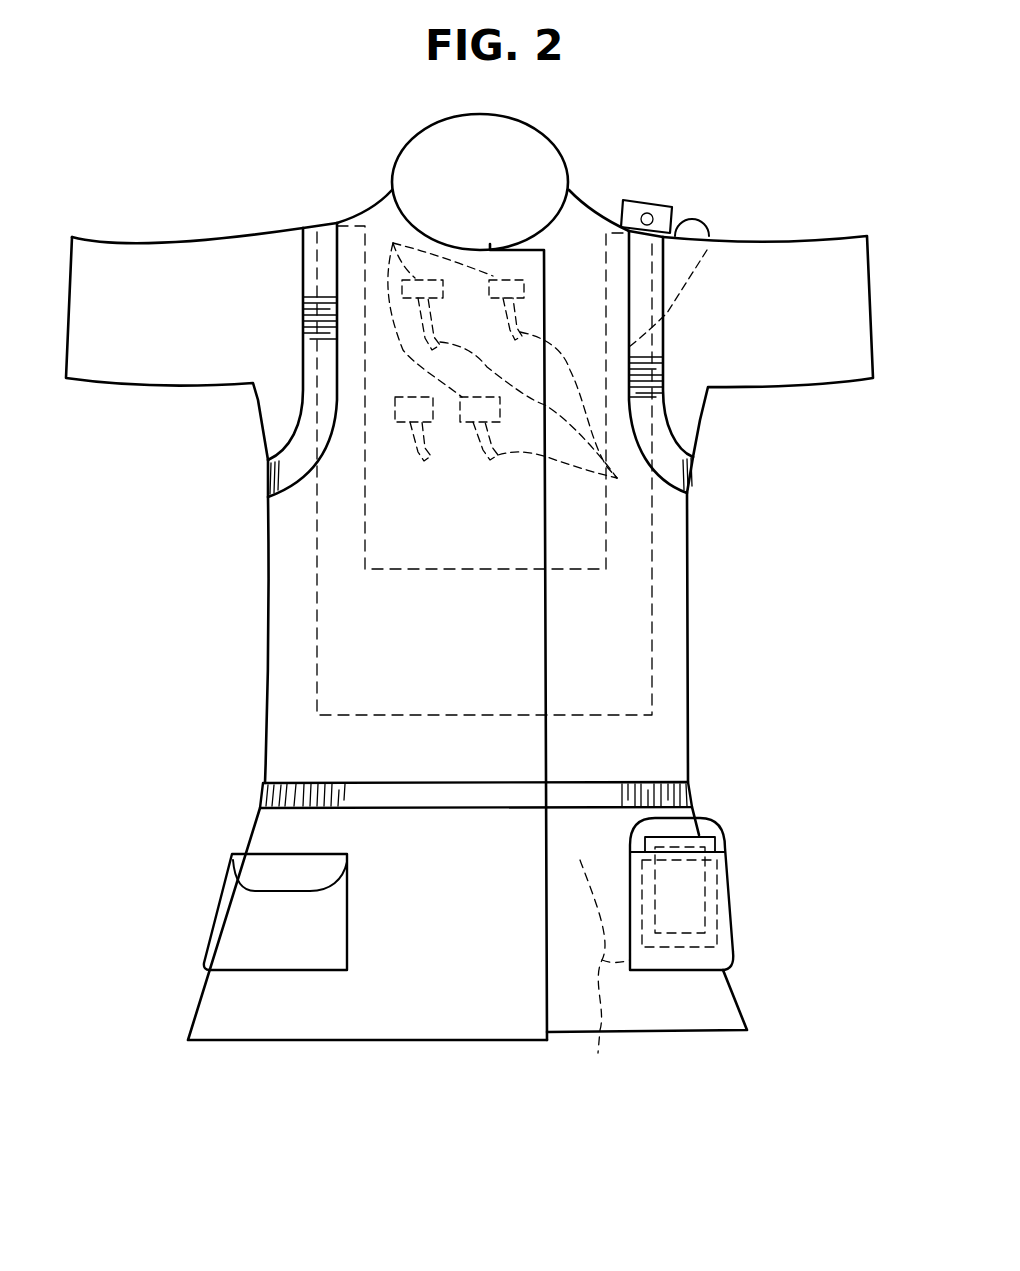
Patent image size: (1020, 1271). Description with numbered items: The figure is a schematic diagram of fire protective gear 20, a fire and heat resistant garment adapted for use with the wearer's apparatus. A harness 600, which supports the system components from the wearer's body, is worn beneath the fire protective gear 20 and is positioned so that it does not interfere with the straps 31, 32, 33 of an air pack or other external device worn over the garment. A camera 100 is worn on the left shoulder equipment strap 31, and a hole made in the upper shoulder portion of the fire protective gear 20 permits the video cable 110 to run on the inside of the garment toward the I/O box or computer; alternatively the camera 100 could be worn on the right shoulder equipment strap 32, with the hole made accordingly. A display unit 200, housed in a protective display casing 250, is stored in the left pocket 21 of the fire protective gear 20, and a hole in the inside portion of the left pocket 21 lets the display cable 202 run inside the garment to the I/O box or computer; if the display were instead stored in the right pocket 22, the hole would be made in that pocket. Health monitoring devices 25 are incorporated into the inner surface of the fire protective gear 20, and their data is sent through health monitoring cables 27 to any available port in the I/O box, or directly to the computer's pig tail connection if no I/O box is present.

The fire protective gear 20 is at (815, 240).
The left pocket 21 is at (733, 927).
The right pocket 22 is at (220, 903).
The health monitoring devices 25 is at (393, 243).
The health monitoring cables 27 is at (418, 460).
The left shoulder equipment strap 31 is at (668, 410).
The right shoulder equipment strap 32 is at (303, 277).
The strap 33 is at (297, 782).
The camera 100 is at (635, 200).
The video cable 110 is at (703, 215).
The display unit 200 is at (720, 874).
The display cable 202 is at (601, 980).
The protective display casing 250 is at (685, 837).
The harness 600 is at (606, 540).